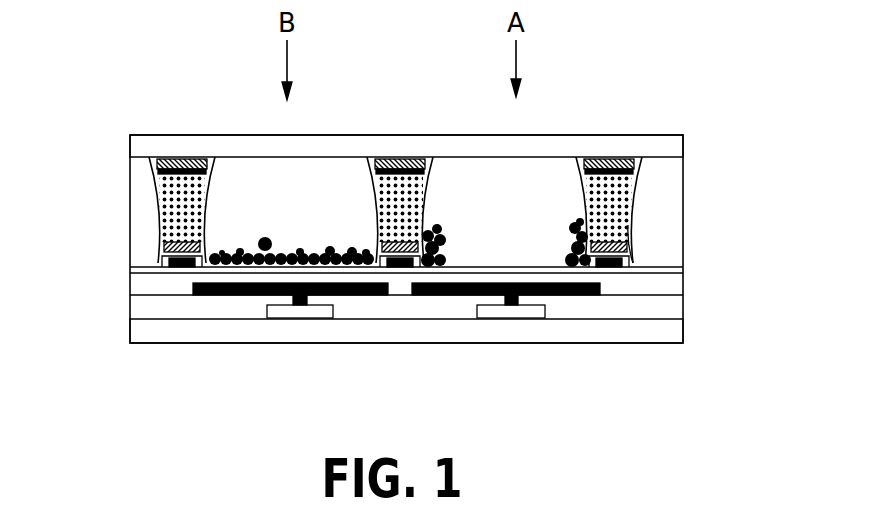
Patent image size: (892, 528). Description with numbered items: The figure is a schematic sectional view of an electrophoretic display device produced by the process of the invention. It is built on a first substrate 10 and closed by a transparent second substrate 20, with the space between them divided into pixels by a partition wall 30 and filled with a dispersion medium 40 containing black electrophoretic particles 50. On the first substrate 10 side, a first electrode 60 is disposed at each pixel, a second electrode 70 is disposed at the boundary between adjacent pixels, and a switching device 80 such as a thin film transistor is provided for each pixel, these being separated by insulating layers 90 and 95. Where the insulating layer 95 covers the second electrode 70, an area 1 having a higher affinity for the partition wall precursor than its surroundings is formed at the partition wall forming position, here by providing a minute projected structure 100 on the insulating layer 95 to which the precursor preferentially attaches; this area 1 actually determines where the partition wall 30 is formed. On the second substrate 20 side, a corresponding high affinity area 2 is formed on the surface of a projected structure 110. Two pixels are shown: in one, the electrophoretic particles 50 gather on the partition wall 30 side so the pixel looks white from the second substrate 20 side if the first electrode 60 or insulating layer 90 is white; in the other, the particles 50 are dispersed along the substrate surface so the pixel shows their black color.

The area 1 is at (632, 236).
The high affinity area 2 is at (647, 180).
The first substrate 10 is at (677, 328).
The transparent second substrate 20 is at (540, 146).
The partition wall 30 is at (637, 203).
The dispersion medium 40 is at (225, 205).
The electrophoretic particles 50 is at (263, 246).
The first electrode 60 is at (355, 296).
The second electrode 70 is at (622, 270).
The switching device 80 is at (500, 315).
The insulating layer 90 is at (137, 283).
The insulating layer 95 is at (131, 267).
The projected structure 100 is at (633, 246).
The projected structure 110 is at (645, 168).